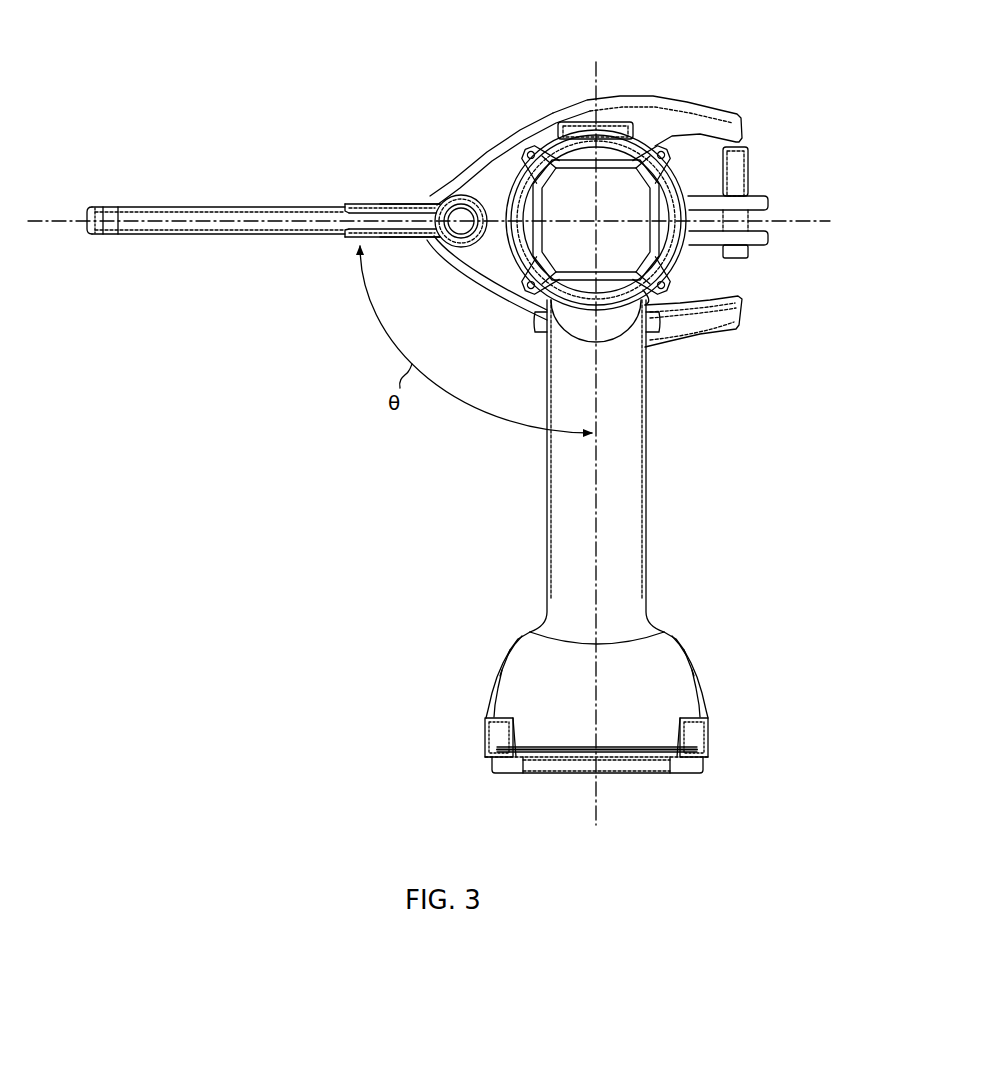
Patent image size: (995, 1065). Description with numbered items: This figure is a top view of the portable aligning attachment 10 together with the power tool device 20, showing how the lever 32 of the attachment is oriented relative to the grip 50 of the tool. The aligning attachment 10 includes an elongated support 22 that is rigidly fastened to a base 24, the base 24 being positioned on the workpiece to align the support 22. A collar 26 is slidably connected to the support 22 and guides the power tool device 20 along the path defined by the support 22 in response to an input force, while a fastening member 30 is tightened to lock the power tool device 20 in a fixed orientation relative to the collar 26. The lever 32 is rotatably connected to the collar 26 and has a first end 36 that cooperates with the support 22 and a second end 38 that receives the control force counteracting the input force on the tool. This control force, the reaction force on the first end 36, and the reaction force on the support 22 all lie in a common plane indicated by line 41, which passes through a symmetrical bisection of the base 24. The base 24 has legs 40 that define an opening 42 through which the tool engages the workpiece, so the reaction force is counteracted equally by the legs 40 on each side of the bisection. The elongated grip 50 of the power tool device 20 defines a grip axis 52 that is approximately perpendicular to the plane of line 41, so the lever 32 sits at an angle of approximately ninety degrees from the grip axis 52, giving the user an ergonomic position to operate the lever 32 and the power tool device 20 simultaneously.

The aligning attachment 10 is at (408, 125).
The power tool device 20 is at (548, 536).
The elongated support 22 is at (463, 205).
The base 24 is at (574, 101).
The collar 26 is at (346, 204).
The fastening member 30 is at (748, 167).
The lever 32 is at (228, 207).
The first end 36 is at (394, 204).
The second end 38 is at (127, 236).
The legs 40 is at (707, 102).
The line indicating plane 41 is at (70, 218).
The opening 42 is at (715, 301).
The elongated grip 50 is at (649, 496).
The grip axis 52 is at (597, 808).